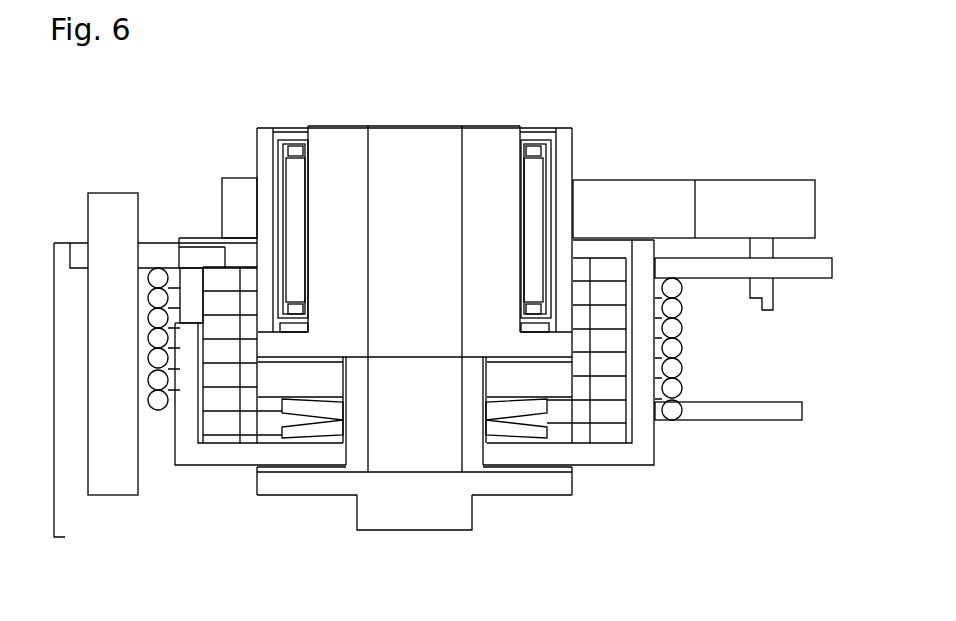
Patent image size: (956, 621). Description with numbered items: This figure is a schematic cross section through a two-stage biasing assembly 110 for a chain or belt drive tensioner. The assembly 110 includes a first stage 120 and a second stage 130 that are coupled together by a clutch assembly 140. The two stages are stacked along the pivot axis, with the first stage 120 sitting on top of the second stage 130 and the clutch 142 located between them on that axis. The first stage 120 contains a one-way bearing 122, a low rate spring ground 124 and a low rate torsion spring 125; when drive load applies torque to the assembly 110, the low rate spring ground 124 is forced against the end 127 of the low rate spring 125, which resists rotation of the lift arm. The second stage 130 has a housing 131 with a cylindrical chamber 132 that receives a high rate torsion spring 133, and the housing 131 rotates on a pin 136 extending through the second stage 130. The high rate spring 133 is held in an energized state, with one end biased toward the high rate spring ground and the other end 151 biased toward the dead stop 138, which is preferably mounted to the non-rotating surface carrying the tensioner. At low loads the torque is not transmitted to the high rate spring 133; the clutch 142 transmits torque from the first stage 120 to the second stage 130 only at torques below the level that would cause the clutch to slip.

The assembly 110 is at (762, 63).
The first stage 120 is at (820, 178).
The one-way bearing 122 is at (295, 230).
The low rate spring ground 124 is at (760, 298).
The low rate torsion spring 125 is at (162, 278).
The end of the low rate spring 127 is at (780, 267).
The second stage 130 is at (53, 390).
The housing 131 is at (227, 453).
The cylindrical chamber 132 is at (595, 435).
The high rate torsion spring 133 is at (605, 390).
The pin 136 is at (415, 518).
The dead stop 138 is at (131, 357).
The clutch assembly 140 is at (557, 435).
The clutch 142 is at (312, 428).
The other end of the high rate spring 151 is at (80, 253).